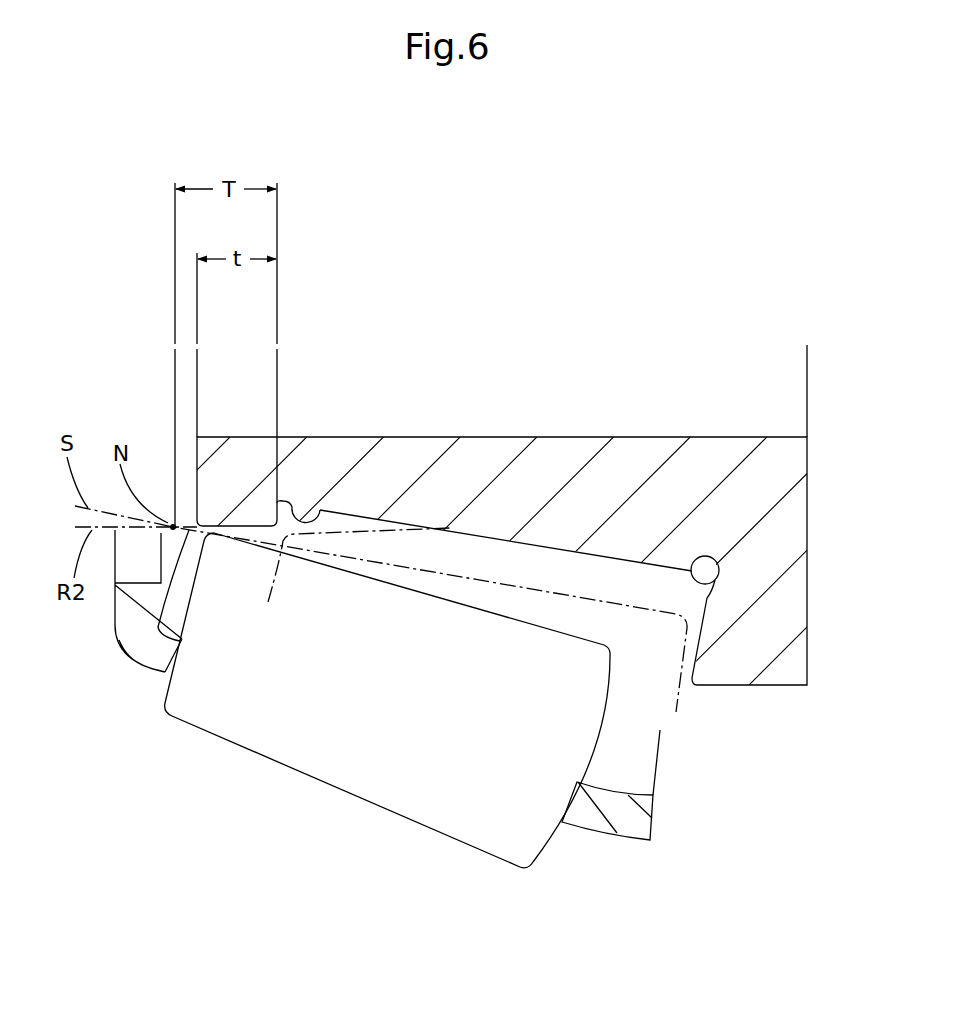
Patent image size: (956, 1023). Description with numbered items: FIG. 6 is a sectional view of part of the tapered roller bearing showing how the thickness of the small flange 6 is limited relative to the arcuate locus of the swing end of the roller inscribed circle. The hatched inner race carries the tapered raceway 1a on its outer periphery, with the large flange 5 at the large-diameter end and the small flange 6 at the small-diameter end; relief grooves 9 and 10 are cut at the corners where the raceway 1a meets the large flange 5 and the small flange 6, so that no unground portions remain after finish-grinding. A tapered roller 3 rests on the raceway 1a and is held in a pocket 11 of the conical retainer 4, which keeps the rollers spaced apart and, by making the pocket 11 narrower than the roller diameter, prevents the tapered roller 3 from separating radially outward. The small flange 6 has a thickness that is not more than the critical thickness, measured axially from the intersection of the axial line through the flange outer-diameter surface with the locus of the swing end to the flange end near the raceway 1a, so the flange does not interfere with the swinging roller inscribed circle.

The tapered raceway 1a is at (514, 545).
The tapered roller 3 is at (352, 744).
The retainer 4 is at (629, 828).
The large flange 5 is at (747, 670).
The small flange 6 is at (182, 639).
The relief groove 9 is at (717, 563).
The relief groove 10 is at (308, 514).
The pocket 11 is at (163, 656).